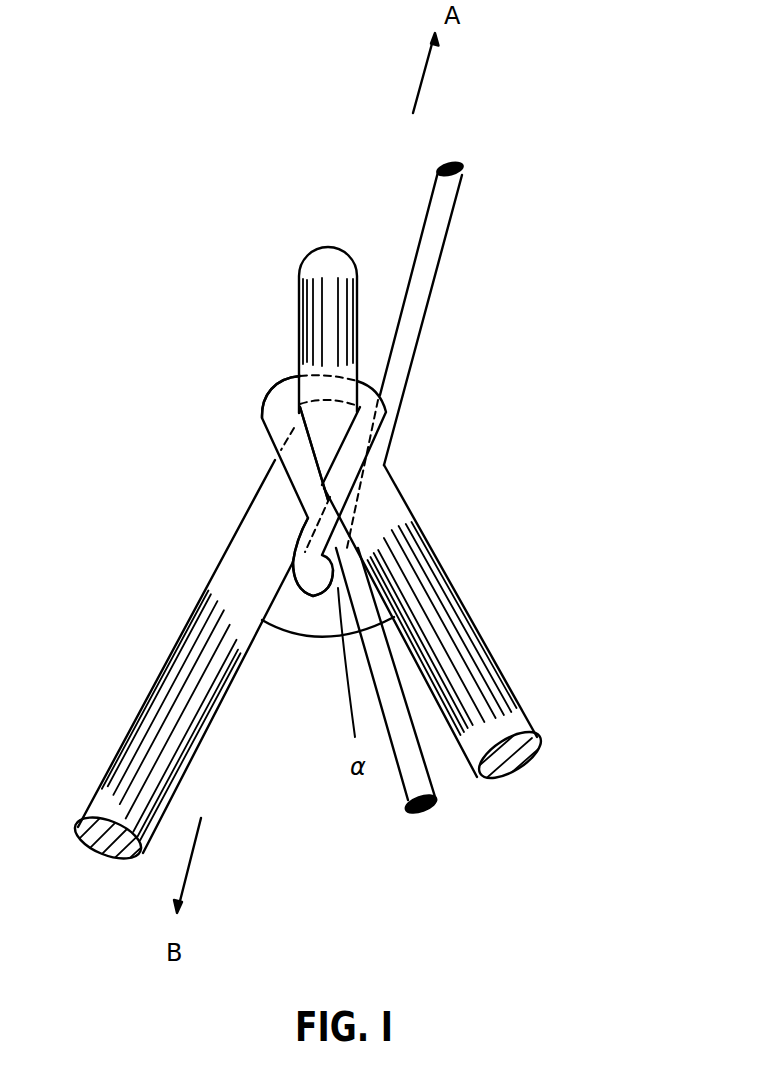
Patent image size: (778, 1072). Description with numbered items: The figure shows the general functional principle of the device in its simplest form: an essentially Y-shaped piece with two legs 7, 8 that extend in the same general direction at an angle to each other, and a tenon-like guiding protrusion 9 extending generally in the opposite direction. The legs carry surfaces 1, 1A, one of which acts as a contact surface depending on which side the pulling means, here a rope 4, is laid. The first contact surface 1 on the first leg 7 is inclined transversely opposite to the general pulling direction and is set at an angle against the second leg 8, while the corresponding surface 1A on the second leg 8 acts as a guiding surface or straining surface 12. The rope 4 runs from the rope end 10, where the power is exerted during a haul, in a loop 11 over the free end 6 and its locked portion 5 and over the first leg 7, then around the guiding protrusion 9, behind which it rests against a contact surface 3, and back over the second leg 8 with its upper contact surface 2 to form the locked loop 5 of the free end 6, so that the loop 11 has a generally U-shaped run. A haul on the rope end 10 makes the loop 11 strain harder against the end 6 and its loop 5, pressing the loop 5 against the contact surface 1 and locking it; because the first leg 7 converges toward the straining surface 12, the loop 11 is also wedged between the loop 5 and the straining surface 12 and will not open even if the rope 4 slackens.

The first contact surface 1 is at (350, 537).
The corresponding surface 1A is at (293, 523).
The upper contact surface 2 is at (293, 492).
The contact surface 3 is at (290, 369).
The rope 4 is at (478, 183).
The locked portion 5 is at (315, 587).
The free end 6 is at (410, 772).
The first leg 7 is at (427, 623).
The second leg 8 is at (204, 646).
The tenon-like guiding protrusion 9 is at (318, 265).
The rope end 10 is at (433, 263).
The loop 11 is at (300, 585).
The straining surface 12 is at (293, 558).